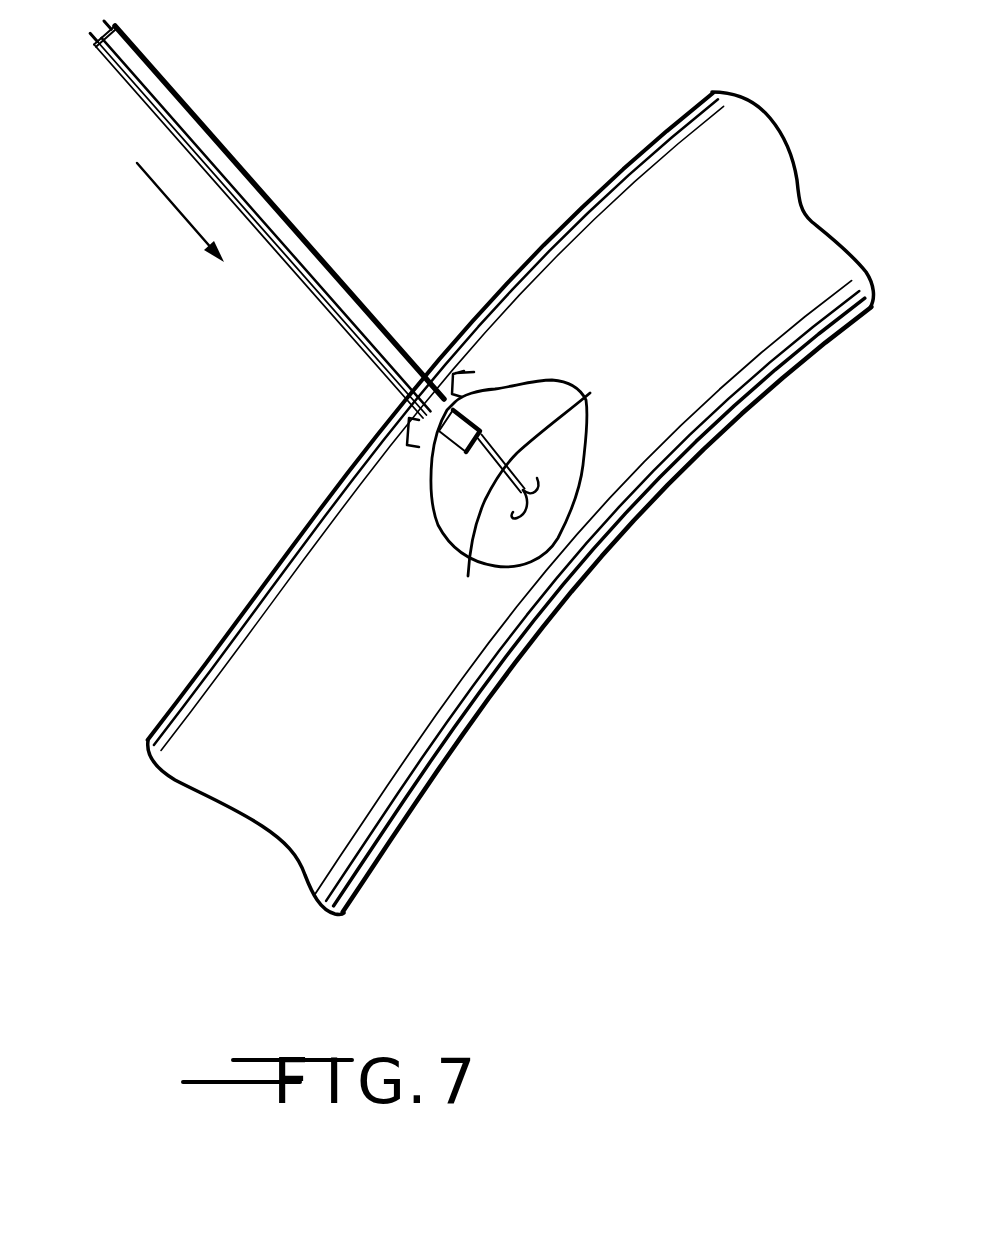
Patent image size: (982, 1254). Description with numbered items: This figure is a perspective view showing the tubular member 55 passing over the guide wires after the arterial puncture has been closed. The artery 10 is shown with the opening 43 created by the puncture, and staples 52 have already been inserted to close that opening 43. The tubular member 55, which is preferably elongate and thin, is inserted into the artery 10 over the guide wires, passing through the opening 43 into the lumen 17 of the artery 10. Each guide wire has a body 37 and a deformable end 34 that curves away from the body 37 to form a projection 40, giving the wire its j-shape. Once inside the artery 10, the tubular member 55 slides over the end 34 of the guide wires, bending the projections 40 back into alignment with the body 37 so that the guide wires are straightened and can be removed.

The artery 10 is at (611, 181).
The lumen 17 is at (226, 825).
The end 34 is at (468, 479).
The body 37 is at (588, 398).
The projection 40 is at (541, 486).
The opening 43 is at (430, 348).
The staples 52 is at (454, 378).
The tubular member 55 is at (257, 183).